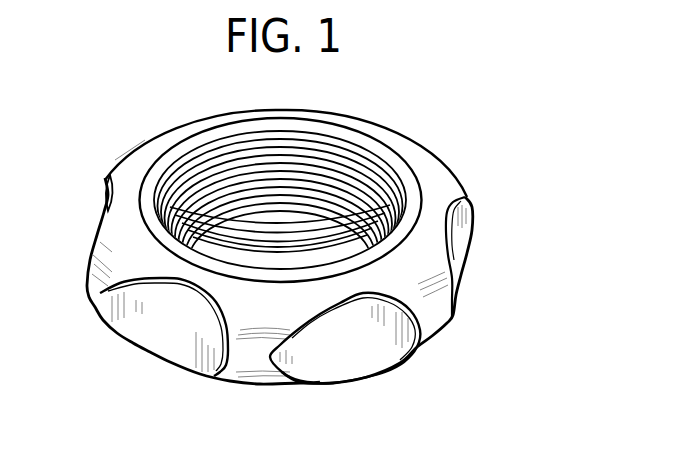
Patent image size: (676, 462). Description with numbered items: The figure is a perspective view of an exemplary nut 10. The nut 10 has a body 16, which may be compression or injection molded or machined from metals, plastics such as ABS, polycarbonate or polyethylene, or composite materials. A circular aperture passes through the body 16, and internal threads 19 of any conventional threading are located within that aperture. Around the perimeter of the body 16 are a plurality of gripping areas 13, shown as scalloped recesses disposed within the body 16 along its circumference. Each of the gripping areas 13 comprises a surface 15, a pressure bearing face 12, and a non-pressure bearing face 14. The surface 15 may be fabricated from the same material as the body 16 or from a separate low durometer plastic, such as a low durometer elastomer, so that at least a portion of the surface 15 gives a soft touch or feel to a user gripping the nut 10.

The nut 10 is at (477, 152).
The pressure bearing face 12 is at (397, 340).
The gripping areas 13 is at (462, 235).
The non-pressure bearing face 14 is at (290, 362).
The surface 15 is at (369, 333).
The body 16 is at (130, 247).
The internal threads 19 is at (325, 152).